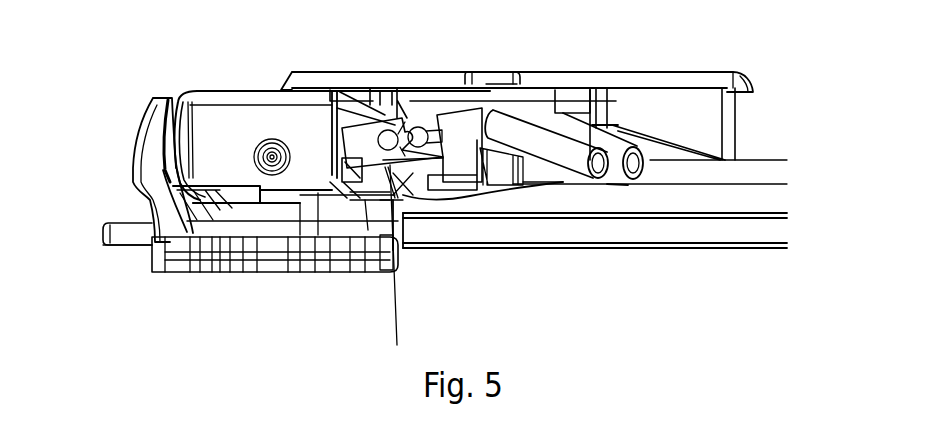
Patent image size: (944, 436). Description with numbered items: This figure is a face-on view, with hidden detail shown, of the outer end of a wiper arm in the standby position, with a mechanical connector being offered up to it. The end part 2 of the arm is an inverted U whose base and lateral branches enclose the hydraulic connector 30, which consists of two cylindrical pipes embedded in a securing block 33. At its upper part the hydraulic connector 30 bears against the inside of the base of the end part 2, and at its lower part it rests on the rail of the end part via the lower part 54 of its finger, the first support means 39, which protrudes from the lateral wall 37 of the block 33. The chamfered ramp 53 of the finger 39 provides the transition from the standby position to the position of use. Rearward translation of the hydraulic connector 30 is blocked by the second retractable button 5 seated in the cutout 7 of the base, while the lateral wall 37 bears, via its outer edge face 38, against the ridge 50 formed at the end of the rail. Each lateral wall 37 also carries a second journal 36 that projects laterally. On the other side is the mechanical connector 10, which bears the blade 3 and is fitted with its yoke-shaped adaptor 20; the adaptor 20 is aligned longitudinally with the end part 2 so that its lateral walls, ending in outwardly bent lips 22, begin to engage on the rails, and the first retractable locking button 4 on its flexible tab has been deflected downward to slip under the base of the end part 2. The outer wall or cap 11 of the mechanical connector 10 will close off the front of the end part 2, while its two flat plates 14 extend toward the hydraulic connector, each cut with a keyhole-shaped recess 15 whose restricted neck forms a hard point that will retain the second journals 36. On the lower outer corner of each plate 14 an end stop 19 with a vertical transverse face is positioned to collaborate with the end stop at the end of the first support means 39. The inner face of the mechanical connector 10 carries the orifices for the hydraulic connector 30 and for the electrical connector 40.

The end part 2 is at (283, 118).
The blade 3 is at (755, 204).
The first retractable locking button 4 is at (391, 88).
The second retractable button 5 is at (493, 72).
The cutout 7 is at (457, 72).
The mechanical connector 10 is at (173, 226).
The cap 11 is at (152, 125).
The flat plates 14 is at (380, 138).
The keyhole-shaped recess 15 is at (348, 142).
The end stop 19 is at (345, 178).
The adaptor 20 is at (190, 133).
The lip 22 is at (222, 198).
The hydraulic connector 30 is at (580, 108).
The securing block 33 is at (607, 117).
The second journal 36 is at (414, 135).
The lateral wall 37 is at (507, 200).
The edge face 38 is at (428, 213).
The first support means 39 is at (388, 198).
The electrical connector 40 is at (545, 232).
The ridge 50 is at (417, 200).
The ramp 53 is at (375, 200).
The lower part of the finger 54 is at (399, 266).